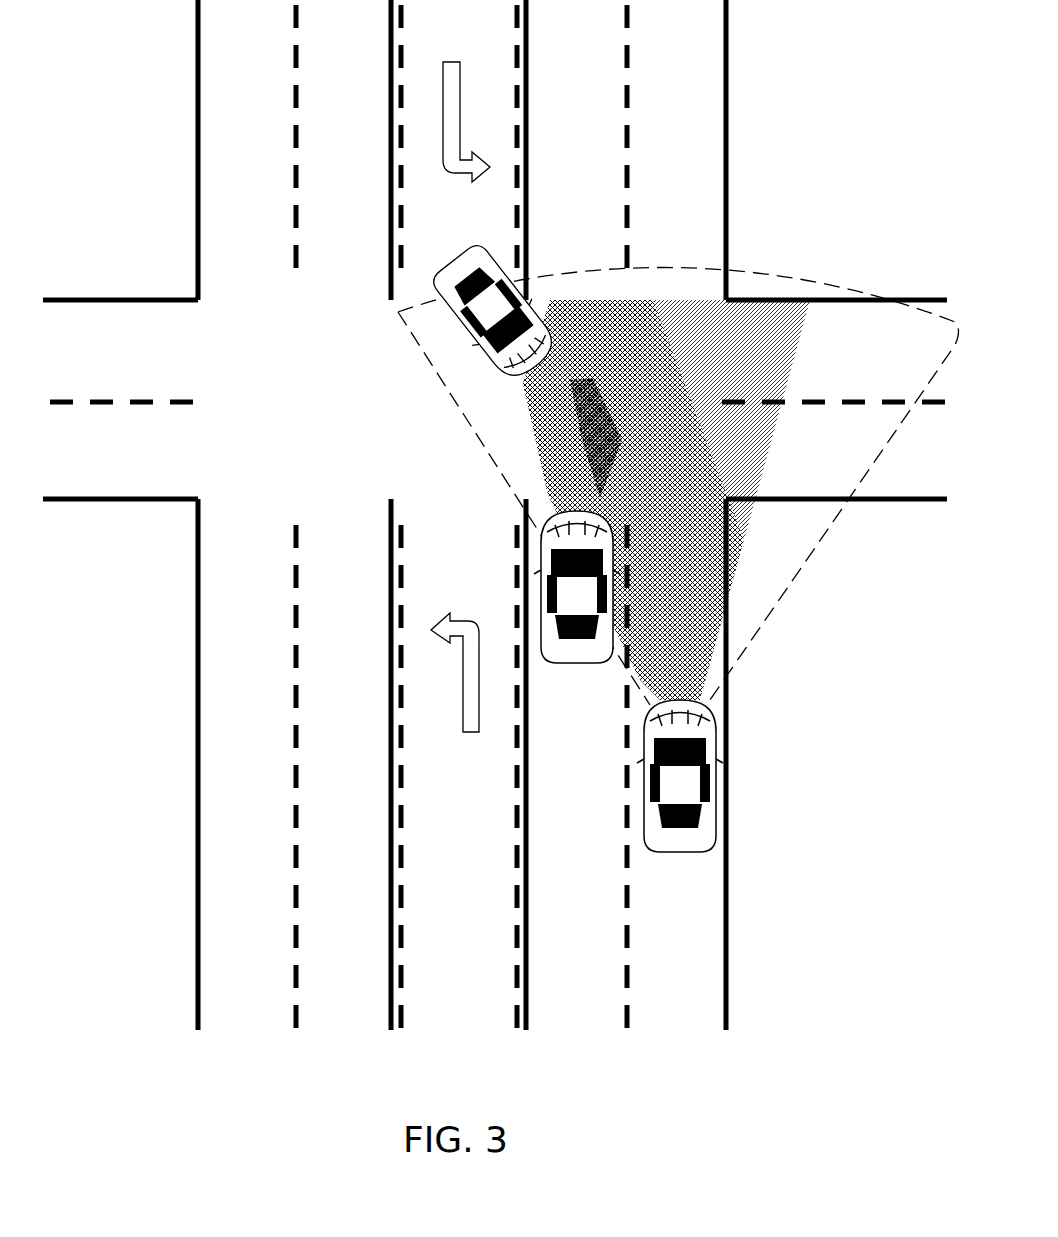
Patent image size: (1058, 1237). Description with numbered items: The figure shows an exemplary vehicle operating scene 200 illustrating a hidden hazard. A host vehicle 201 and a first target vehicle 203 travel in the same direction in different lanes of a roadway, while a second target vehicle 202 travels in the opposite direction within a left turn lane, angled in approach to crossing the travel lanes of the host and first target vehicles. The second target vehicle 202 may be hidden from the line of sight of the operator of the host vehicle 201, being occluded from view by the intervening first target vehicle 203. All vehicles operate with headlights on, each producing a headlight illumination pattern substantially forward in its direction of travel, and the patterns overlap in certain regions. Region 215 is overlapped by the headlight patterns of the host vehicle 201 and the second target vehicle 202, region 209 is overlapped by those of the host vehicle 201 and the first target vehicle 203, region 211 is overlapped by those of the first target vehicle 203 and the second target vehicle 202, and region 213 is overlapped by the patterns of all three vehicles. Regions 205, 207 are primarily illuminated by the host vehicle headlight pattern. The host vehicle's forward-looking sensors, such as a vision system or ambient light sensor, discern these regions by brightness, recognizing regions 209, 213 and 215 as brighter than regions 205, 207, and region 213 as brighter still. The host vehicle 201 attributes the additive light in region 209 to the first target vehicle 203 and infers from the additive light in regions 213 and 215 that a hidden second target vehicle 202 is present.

The scene 200 is at (851, 103).
The host vehicle 201 is at (665, 852).
The second target vehicle 202 is at (443, 262).
The first target vehicle 203 is at (553, 660).
The region 205 is at (650, 667).
The region 207 is at (762, 358).
The region 209 is at (607, 318).
The region 211 is at (523, 403).
The region 213 is at (580, 455).
The region 215 is at (700, 603).